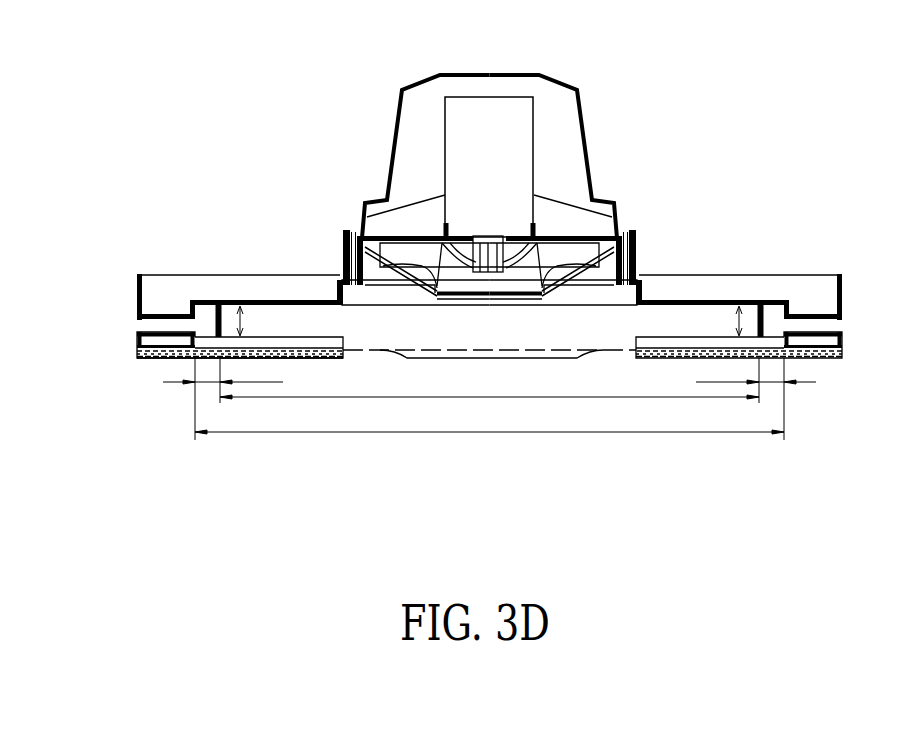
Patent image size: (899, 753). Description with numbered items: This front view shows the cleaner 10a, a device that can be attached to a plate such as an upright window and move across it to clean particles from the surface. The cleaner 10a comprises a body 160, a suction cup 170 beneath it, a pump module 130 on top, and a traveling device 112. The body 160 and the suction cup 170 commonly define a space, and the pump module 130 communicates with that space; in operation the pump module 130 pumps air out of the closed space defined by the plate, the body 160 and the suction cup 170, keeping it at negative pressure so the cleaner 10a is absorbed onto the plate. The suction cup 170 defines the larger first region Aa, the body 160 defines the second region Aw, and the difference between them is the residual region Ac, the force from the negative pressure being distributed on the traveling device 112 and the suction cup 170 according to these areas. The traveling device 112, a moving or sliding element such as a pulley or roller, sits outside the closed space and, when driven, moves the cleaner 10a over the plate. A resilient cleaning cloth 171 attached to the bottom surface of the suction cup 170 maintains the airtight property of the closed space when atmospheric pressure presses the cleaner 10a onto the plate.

The cleaner 10a is at (837, 72).
The pump module 130 is at (460, 155).
The body 160 is at (137, 303).
The suction cup 170 is at (137, 345).
The cleaning cloth 171 is at (150, 360).
The traveling device 112 is at (437, 354).